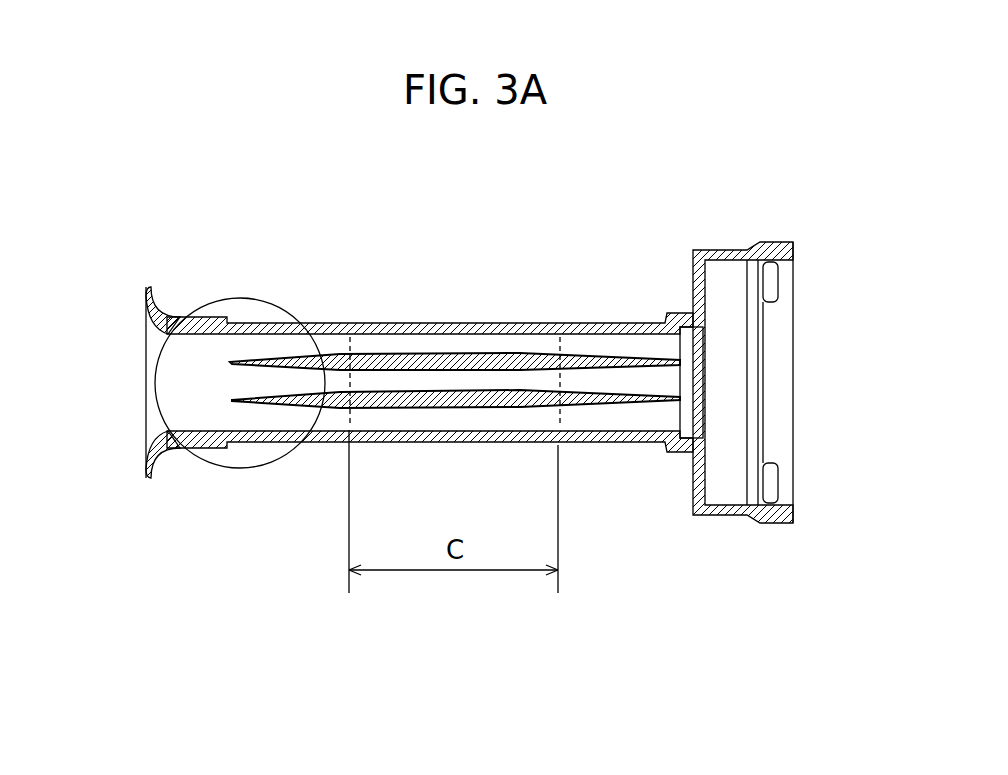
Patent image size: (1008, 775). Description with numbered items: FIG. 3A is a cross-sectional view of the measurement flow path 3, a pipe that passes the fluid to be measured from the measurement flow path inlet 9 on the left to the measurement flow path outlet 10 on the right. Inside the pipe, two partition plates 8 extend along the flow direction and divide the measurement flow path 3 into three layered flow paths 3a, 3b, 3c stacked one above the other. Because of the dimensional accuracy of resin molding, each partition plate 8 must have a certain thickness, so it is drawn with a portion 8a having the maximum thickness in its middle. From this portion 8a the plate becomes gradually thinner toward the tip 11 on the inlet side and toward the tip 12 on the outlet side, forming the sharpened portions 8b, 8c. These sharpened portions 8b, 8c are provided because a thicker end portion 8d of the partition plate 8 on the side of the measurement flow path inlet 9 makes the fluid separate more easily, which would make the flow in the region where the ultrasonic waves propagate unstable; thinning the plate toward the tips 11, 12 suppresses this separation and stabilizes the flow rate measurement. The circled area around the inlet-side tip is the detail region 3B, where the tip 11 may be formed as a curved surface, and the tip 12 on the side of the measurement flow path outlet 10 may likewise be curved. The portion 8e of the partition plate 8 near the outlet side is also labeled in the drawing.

The measurement flow path 3 is at (407, 323).
The layered flow path 3a is at (360, 343).
The layered flow path 3b is at (420, 380).
The layered flow path 3c is at (487, 417).
The detail region of FIG. 3B is at (278, 463).
The partition plate 8 is at (608, 397).
The portion having the maximum thickness 8a is at (503, 362).
The sharpened portion 8b is at (310, 360).
The sharpened portion 8c is at (598, 362).
The end portion 8d is at (262, 402).
The blade portion 8e is at (628, 398).
The measurement flow path inlet 9 is at (148, 287).
The measurement flow path outlet 10 is at (713, 256).
The tip 11 is at (247, 400).
The tip 12 is at (683, 398).